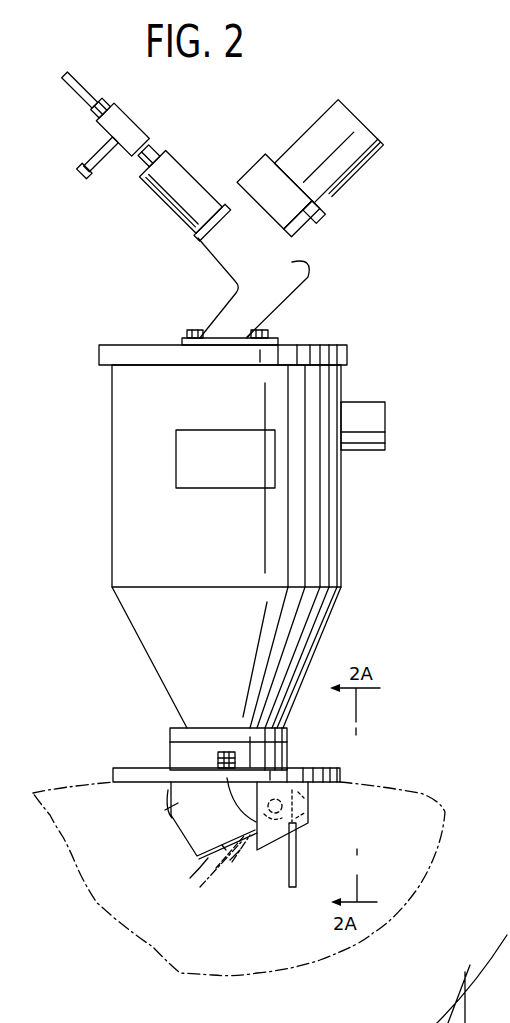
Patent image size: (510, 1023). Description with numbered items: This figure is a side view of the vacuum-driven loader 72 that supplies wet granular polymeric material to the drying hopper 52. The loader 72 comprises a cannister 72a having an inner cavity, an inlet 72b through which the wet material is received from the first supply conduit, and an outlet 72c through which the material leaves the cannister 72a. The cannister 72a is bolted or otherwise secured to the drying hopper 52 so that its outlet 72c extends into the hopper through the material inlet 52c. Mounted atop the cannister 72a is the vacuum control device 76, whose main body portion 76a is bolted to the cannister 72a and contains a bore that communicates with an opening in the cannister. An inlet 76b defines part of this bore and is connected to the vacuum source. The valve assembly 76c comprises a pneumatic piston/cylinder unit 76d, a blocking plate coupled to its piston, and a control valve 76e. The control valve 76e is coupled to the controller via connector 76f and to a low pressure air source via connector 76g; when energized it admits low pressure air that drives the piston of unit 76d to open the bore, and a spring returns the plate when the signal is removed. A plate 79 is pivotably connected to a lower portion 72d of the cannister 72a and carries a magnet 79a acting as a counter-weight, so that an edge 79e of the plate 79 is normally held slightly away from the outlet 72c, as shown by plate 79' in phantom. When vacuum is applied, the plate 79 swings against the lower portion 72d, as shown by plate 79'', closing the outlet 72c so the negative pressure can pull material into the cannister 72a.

The vacuum-driven loader 72 is at (288, 96).
The cannister 72a is at (323, 540).
The inlet 72b is at (373, 428).
The outlet 72c is at (211, 852).
The lower portion 72d is at (147, 783).
The vacuum control device 76 is at (362, 221).
The main body portion 76a is at (326, 198).
The inlet 76b is at (370, 157).
The valve assembly 76c is at (199, 166).
The pneumatic piston/cylinder unit 76d is at (173, 203).
The control valve 76e is at (123, 122).
The connector 76f is at (95, 154).
The connector 76g is at (75, 93).
The drying hopper 52 is at (425, 792).
The material inlet 52c is at (178, 766).
The plate 79 is at (305, 887).
The magnet 79a is at (303, 820).
The edge 79e is at (230, 853).
The plate in normal position 79' is at (258, 876).
The plate in closed position 79'' is at (191, 879).